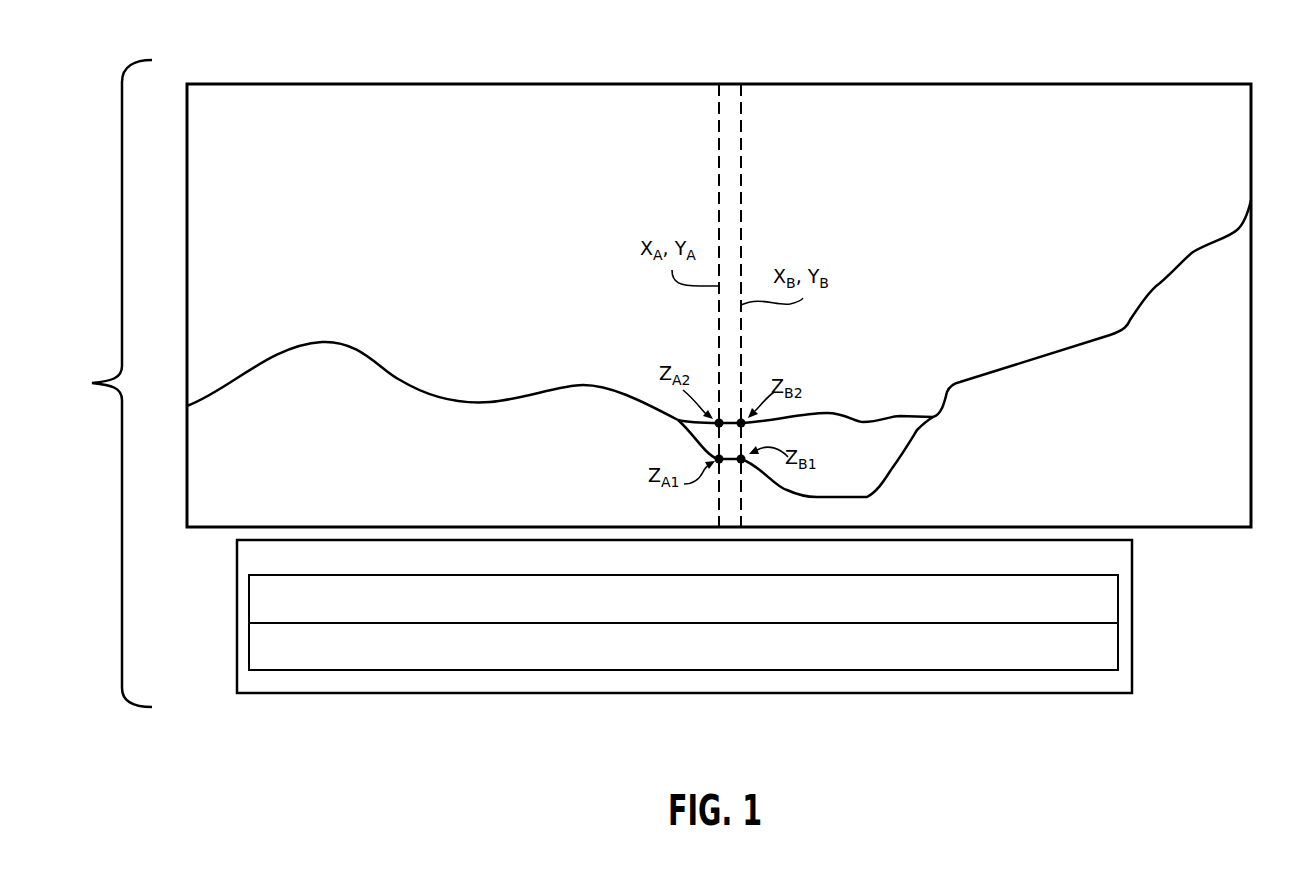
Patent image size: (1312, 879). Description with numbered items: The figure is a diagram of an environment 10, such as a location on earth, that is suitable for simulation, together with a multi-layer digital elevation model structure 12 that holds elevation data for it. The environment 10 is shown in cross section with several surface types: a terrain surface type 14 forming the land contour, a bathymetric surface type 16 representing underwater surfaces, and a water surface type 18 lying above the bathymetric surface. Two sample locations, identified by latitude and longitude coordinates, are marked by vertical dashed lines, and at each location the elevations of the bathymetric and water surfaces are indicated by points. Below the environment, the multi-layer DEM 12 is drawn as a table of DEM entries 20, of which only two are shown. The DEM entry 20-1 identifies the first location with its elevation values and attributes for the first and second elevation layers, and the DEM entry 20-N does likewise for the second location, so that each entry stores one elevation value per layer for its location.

The environment 10 is at (972, 84).
The multi-layer digital elevation model structure 12 is at (1133, 553).
The terrain surface type 14 is at (442, 382).
The bathymetric surface type 16 is at (839, 485).
The water surface type 18 is at (862, 410).
The DEM entries 20 is at (766, 604).
The first DEM entry 20-1 is at (1120, 603).
The Nth DEM entry 20-N is at (1120, 647).